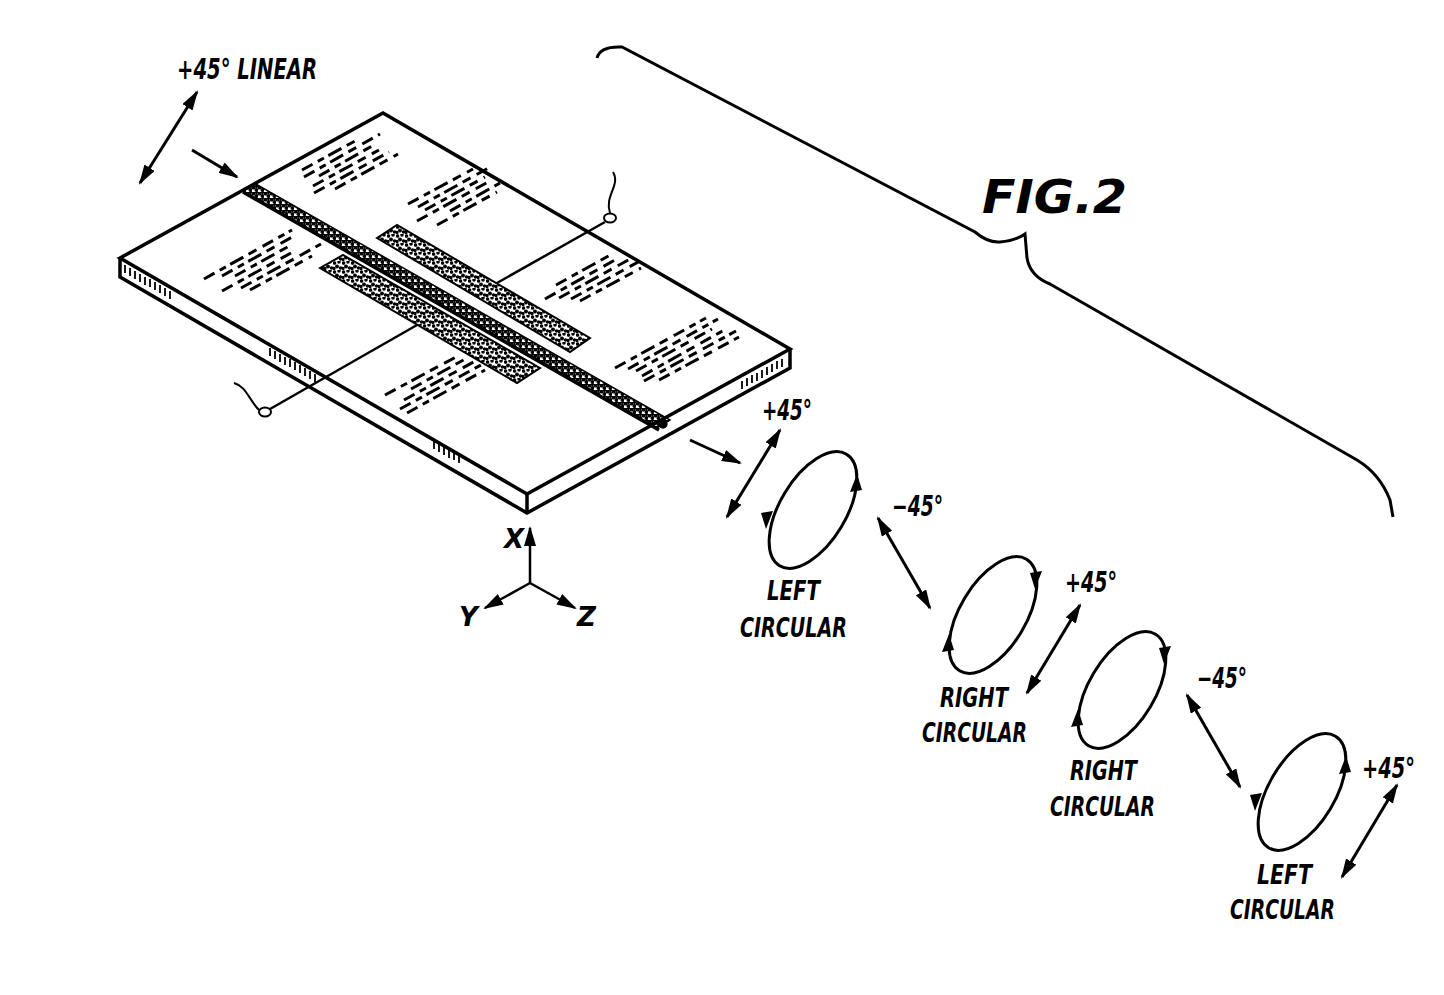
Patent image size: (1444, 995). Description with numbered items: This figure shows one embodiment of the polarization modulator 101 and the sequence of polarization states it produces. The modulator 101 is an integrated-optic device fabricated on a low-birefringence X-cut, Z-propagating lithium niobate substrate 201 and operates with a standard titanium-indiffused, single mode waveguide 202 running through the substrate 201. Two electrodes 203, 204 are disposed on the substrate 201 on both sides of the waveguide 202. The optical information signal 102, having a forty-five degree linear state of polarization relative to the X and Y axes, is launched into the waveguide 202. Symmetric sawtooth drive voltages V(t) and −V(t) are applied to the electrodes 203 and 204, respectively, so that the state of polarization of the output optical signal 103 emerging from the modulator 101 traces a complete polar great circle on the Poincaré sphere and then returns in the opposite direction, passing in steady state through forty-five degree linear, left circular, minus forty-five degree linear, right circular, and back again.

The polarization modulator 101 is at (778, 280).
The optical information signal 102 is at (205, 154).
The modulated optical signal 103 is at (697, 446).
The substrate 201 is at (771, 338).
The waveguide 202 is at (598, 380).
The electrode 203 is at (462, 266).
The electrode 204 is at (377, 302).